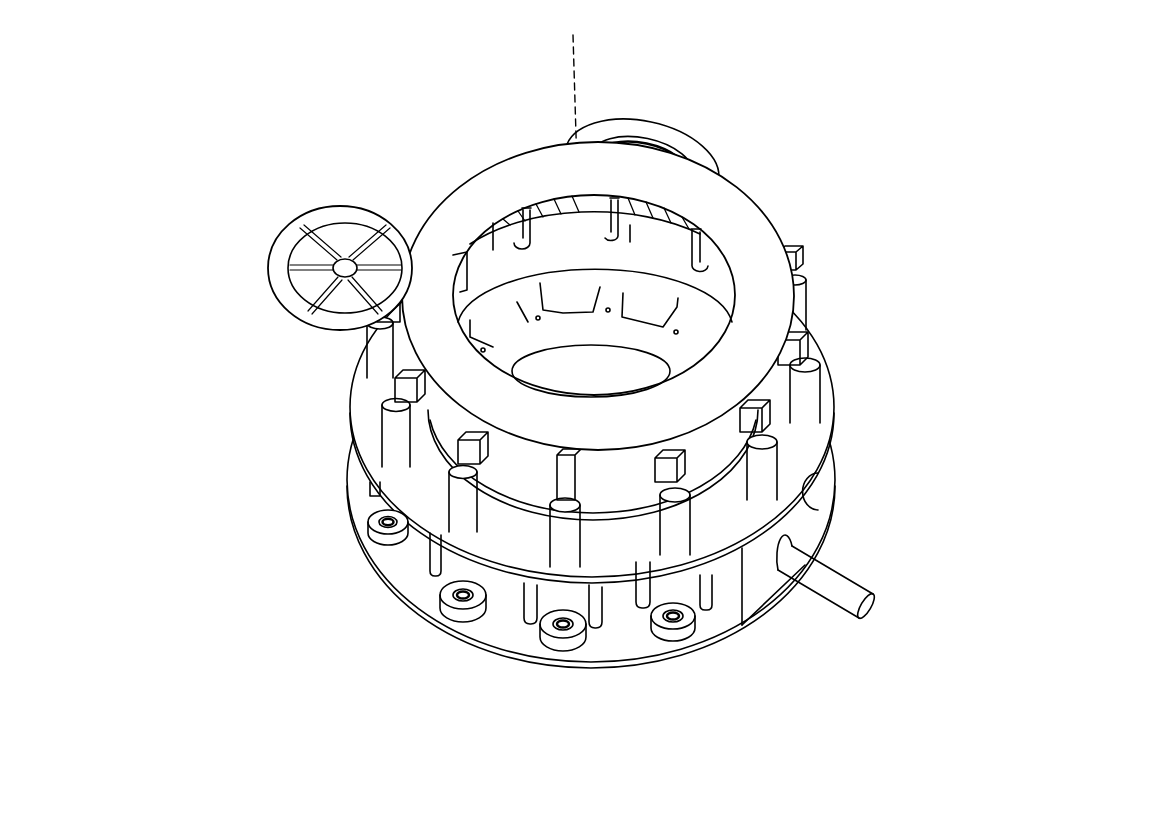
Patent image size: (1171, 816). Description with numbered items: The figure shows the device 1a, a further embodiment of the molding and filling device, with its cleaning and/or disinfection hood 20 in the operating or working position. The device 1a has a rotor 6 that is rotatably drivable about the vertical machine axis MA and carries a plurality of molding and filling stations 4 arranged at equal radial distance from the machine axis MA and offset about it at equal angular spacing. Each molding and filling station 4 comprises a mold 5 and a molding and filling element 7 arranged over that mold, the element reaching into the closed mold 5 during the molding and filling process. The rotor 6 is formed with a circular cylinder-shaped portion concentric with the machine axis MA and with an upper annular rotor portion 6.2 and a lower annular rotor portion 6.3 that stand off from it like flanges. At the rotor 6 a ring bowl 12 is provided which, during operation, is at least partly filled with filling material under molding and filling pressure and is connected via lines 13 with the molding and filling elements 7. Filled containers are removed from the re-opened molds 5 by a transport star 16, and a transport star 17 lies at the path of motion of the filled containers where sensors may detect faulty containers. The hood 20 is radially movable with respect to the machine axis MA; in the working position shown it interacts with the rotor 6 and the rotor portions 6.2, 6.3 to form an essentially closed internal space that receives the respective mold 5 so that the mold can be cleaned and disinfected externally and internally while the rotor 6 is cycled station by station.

The device 1a is at (862, 135).
The vertical machine axis MA is at (546, 201).
The molding and filling station 4 is at (345, 533).
The mold 5 is at (400, 533).
The rotor 6 is at (852, 417).
The rotor portion 6.2 is at (808, 430).
The rotor portion 6.3 is at (615, 645).
The molding and filling element 7 is at (808, 383).
The ring bowl 12 is at (710, 200).
The line 13 is at (690, 253).
The transport star 16 is at (658, 122).
The transport star 17 is at (283, 240).
The hood 20 is at (753, 592).